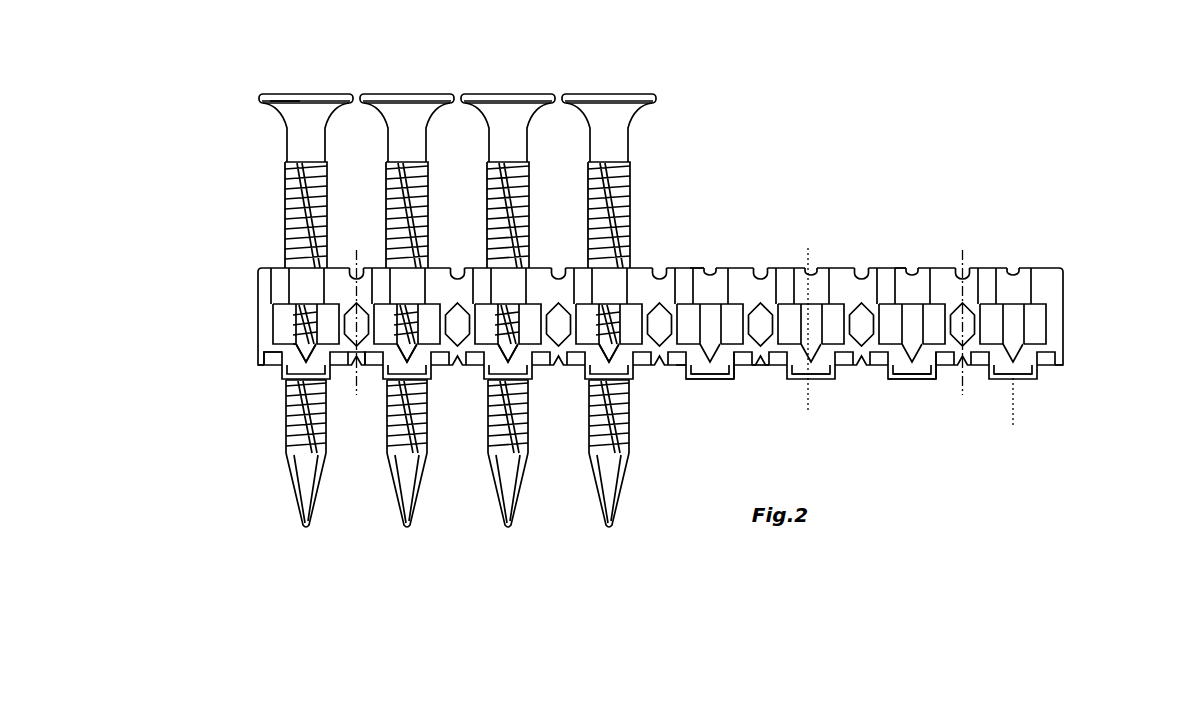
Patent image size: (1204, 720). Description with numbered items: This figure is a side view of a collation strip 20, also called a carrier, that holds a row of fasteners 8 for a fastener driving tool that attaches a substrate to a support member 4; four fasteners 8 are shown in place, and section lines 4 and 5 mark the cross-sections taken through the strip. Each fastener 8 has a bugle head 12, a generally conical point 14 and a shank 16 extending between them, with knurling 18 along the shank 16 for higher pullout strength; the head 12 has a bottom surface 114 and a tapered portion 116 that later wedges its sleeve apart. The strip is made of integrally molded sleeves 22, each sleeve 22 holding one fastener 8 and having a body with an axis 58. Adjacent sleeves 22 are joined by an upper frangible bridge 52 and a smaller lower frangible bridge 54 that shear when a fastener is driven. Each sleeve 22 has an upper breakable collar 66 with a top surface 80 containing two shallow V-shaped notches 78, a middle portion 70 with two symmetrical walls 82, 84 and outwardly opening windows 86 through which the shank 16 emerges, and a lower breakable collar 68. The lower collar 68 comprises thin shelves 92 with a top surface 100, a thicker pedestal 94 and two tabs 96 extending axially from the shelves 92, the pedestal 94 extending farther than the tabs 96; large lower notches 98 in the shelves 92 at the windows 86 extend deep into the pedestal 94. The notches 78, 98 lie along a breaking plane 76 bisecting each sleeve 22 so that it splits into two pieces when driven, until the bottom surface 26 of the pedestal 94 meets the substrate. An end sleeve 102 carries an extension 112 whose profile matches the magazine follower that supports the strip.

The support member 4 is at (993, 392).
The section line 5- 5 is at (335, 392).
The fastener 8 is at (640, 166).
The head 12 is at (617, 93).
The point 14 is at (604, 500).
The shank 16 is at (630, 230).
The knurling 18 is at (592, 165).
The collation strip 20 is at (670, 330).
The sleeve 22 is at (1052, 388).
The bottom surface 26 is at (890, 381).
The upper frangible bridge 52 is at (1009, 266).
The lower frangible bridge 54 is at (765, 372).
The axis 58 is at (811, 252).
The upper breakable collar 66 is at (290, 296).
The lower breakable collar 68 is at (1040, 383).
The middle portion 70 is at (537, 325).
The breaking plane 76 is at (1012, 405).
The notches 78 is at (907, 264).
The top surface 80 is at (1022, 266).
The wall 82 is at (535, 358).
The wall 84 is at (558, 312).
The windows 86 is at (915, 380).
The shelves 92 is at (645, 382).
The pedestal 94 is at (930, 376).
The tabs 96 is at (340, 380).
The lower notches 98 is at (681, 372).
The top surface 100 is at (258, 338).
The end sleeve 102 is at (259, 272).
The extension 112 is at (258, 320).
The bottom surface 114 is at (268, 108).
The tapered portion 116 is at (293, 113).